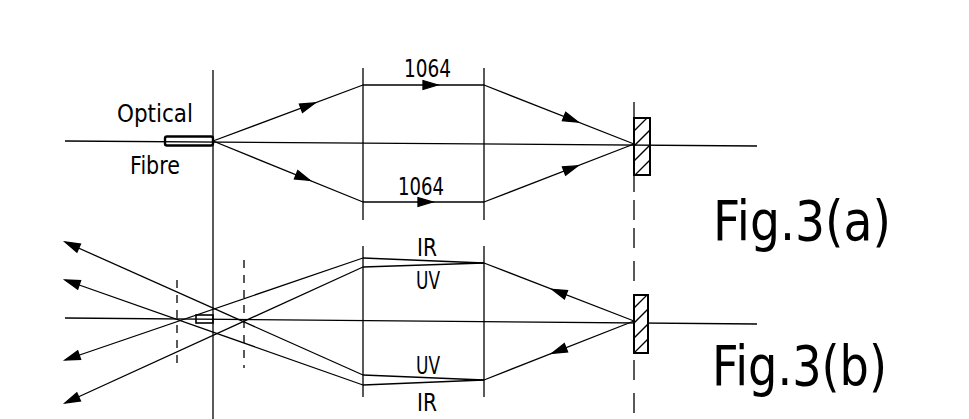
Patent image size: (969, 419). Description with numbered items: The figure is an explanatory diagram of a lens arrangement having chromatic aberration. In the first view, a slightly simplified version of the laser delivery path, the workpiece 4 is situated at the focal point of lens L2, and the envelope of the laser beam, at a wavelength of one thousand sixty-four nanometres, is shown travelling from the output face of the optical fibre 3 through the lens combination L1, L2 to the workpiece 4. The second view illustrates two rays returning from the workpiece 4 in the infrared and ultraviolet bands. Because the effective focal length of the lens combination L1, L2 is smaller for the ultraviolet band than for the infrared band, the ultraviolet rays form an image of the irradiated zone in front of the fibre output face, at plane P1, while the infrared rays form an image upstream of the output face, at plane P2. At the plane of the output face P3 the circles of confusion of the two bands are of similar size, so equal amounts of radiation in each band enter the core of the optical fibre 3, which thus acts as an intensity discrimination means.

In FIG. 3A, the optical fibre 3 is at (208, 147).
In FIG. 3B, the optical fibre 3 is at (204, 319).
In FIG. 3A, the workpiece 4 is at (651, 121).
In FIG. 3B, the workpiece 4 is at (641, 323).
In FIG. 3A, the lens L1 is at (365, 69).
In FIG. 3A, the lens L2 is at (487, 69).
In FIG. 3B, the plane P1 is at (256, 304).
In FIG. 3B, the plane P2 is at (184, 304).
In FIG. 3A, the plane of the output face P3 is at (218, 133).